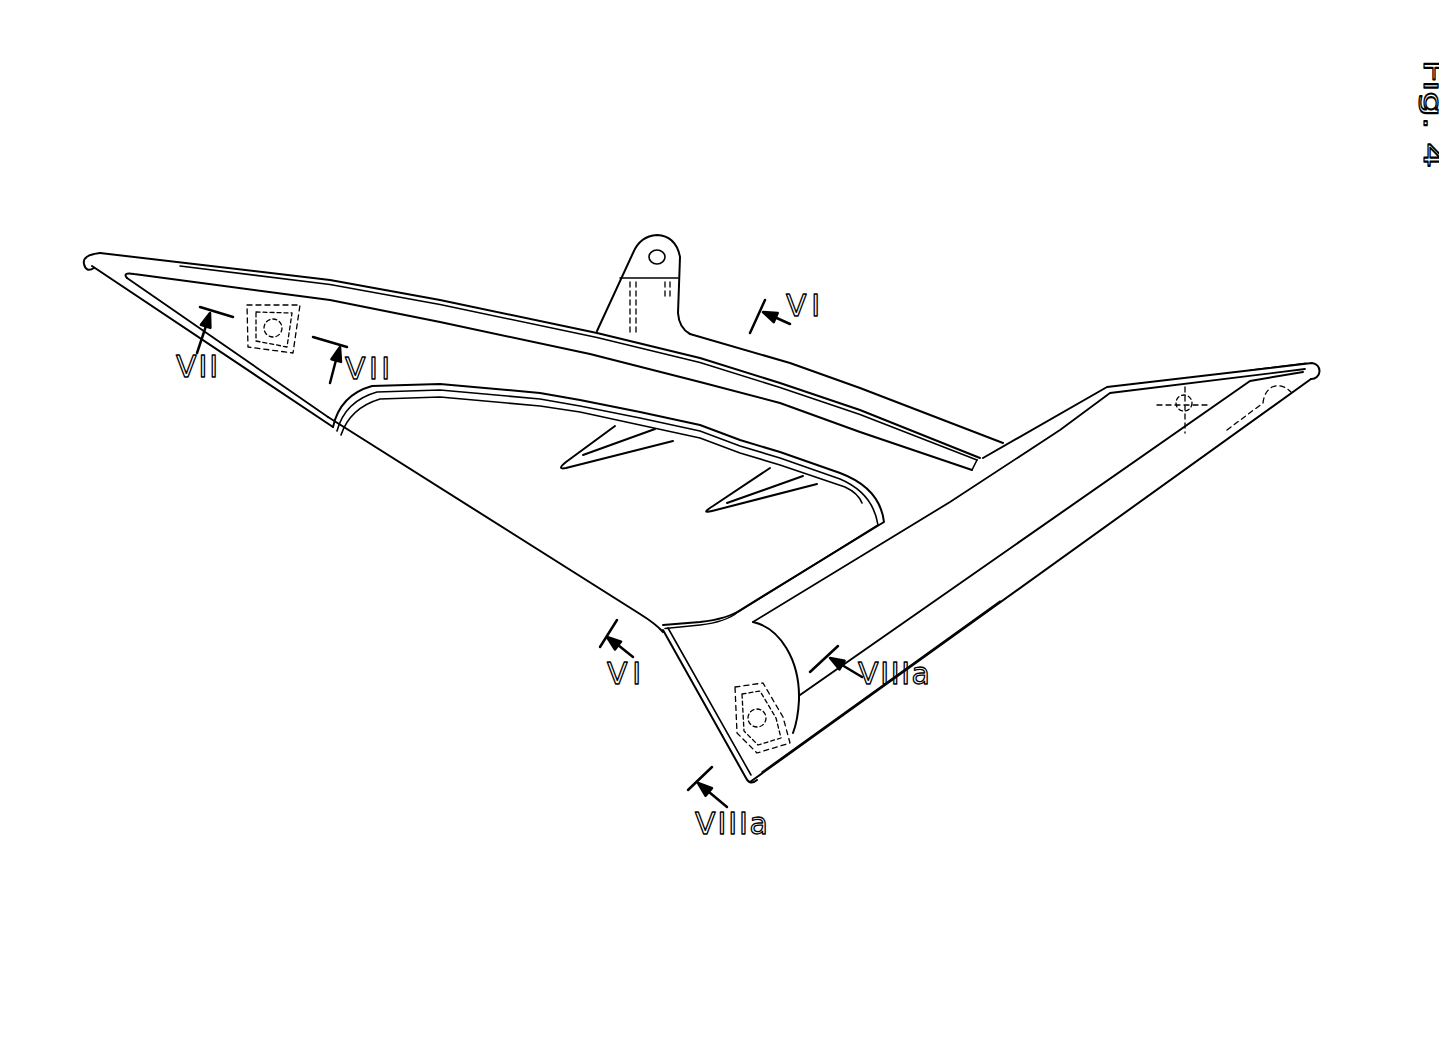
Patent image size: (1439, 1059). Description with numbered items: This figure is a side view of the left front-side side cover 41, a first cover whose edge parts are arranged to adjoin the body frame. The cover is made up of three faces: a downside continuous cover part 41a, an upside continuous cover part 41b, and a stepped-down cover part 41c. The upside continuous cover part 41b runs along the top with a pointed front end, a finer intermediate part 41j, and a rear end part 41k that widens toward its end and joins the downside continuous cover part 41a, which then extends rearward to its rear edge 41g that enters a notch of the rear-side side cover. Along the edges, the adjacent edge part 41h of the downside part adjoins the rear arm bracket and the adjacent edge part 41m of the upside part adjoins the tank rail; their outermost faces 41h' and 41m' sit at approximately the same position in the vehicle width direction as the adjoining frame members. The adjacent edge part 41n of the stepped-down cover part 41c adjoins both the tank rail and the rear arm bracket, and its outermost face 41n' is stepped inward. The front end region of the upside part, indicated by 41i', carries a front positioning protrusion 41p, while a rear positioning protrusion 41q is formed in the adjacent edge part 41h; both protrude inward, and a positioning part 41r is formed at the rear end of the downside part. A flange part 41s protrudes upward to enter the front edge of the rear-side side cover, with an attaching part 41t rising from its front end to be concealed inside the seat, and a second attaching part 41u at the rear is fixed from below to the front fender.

The front-side side cover 41 is at (464, 296).
The downside continuous cover part 41a is at (1086, 550).
The upside continuous cover part 41b is at (336, 278).
The stepped-down cover part 41c is at (565, 542).
The rear edge 41g is at (1278, 366).
The adjacent edge part 41h is at (847, 694).
The outermost face 41h' is at (666, 705).
The inner lip of upper flange 41i' is at (528, 316).
The intermediate part 41j is at (795, 388).
The rear end part 41k is at (970, 462).
The adjacent edge part 41m is at (227, 381).
The outermost face 41m' is at (212, 360).
The adjacent edge part 41n is at (495, 524).
The outermost face 41n' is at (392, 508).
The front positioning protrusion 41p is at (300, 323).
The rear positioning protrusion 41q is at (788, 757).
The positioning part 41r is at (1192, 387).
The flange part 41s is at (703, 337).
The attaching part 41t is at (640, 260).
The attaching part 41u is at (1300, 390).